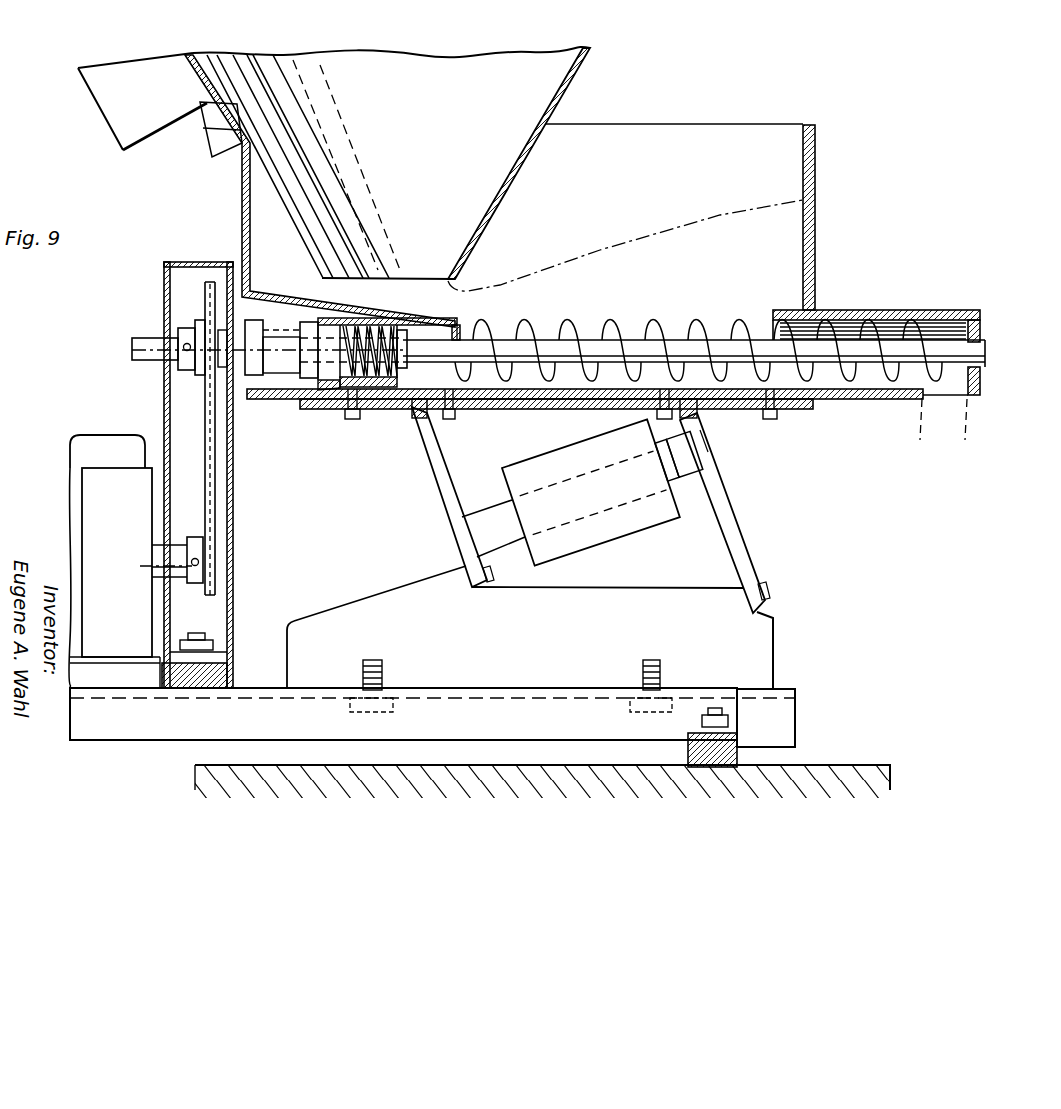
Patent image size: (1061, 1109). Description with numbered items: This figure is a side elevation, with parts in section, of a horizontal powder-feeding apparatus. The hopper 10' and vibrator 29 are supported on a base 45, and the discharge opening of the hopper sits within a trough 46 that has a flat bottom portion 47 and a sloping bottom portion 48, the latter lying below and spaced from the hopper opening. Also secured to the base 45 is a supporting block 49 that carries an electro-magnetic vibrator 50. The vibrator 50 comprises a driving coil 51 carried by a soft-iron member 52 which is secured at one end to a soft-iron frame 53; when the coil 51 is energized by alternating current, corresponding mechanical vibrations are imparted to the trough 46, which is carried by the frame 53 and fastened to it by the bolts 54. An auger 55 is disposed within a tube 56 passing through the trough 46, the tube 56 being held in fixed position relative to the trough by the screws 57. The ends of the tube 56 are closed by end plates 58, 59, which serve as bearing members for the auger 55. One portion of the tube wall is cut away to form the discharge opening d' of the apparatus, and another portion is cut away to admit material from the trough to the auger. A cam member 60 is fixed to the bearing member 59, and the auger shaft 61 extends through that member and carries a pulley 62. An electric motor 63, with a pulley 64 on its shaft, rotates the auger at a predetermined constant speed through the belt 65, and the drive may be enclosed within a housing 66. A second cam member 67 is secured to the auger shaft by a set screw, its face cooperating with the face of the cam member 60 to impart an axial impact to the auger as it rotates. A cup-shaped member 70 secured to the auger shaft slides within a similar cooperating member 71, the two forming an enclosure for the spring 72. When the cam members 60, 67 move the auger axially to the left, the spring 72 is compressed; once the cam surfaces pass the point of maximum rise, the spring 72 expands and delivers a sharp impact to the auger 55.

The hopper 10' is at (498, 169).
The vibrator 29 is at (130, 133).
The sloping bottom portion 48 is at (271, 294).
The trough 46 is at (816, 193).
The auger 55 is at (836, 326).
The tube 56 is at (930, 312).
The end plate 58 is at (985, 333).
The discharge opening d' is at (961, 420).
The flat bottom portion 47 is at (742, 400).
The bolts 54 is at (451, 420).
The screws 57 is at (351, 419).
The spring 72 is at (406, 337).
The cooperating member 71 is at (370, 388).
The cup-shaped member 70 is at (386, 380).
The end plate 59 is at (325, 390).
The cam member 60 is at (306, 380).
The second cam member 67 is at (251, 326).
The housing 66 is at (166, 400).
The auger shaft 61 is at (135, 346).
The pulley 62 is at (186, 328).
The belt 65 is at (218, 511).
The pulley 64 is at (195, 578).
The electric motor 63 is at (93, 486).
The base 45 is at (788, 722).
The supporting block 49 is at (756, 658).
The soft-iron member 52 is at (490, 515).
The soft-iron frame 53 is at (746, 548).
The driving coil 51 is at (657, 516).
The electro-magnetic vibrator 50 is at (735, 501).